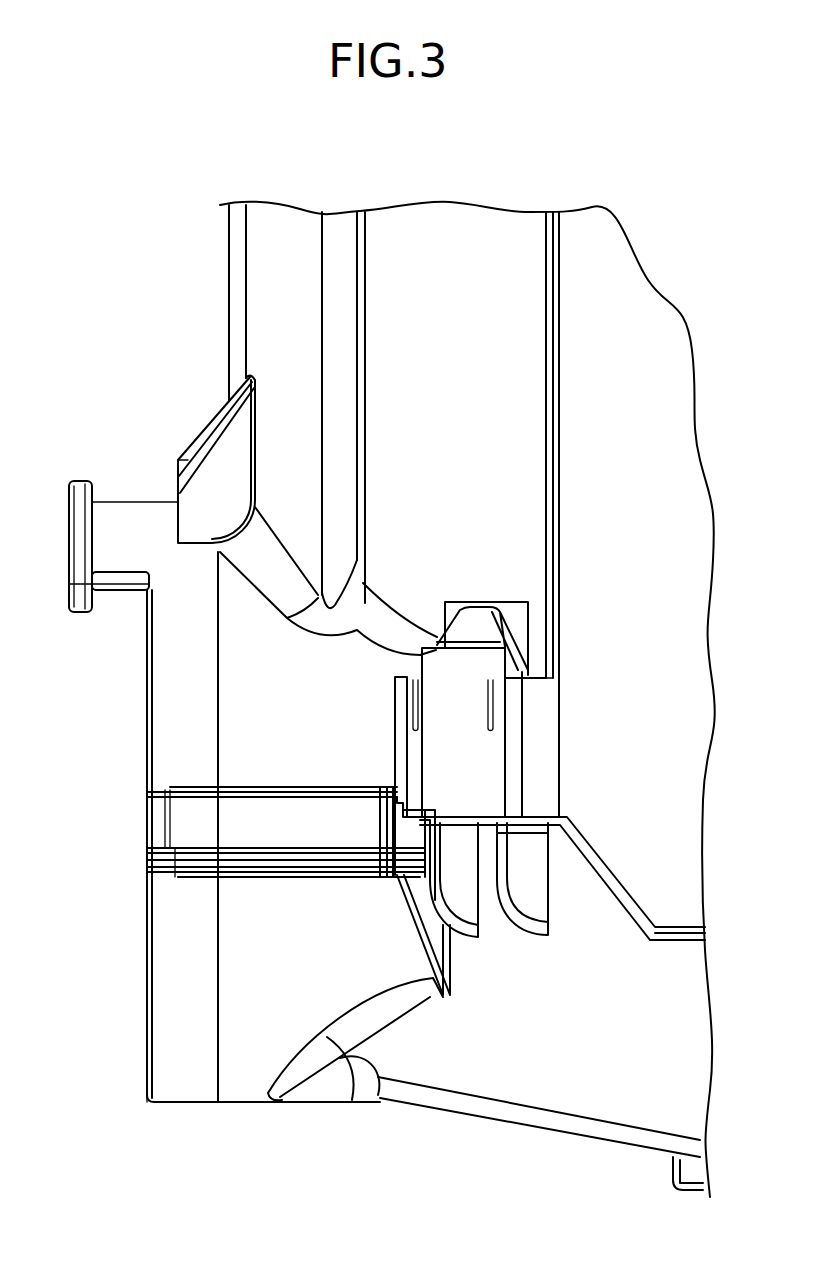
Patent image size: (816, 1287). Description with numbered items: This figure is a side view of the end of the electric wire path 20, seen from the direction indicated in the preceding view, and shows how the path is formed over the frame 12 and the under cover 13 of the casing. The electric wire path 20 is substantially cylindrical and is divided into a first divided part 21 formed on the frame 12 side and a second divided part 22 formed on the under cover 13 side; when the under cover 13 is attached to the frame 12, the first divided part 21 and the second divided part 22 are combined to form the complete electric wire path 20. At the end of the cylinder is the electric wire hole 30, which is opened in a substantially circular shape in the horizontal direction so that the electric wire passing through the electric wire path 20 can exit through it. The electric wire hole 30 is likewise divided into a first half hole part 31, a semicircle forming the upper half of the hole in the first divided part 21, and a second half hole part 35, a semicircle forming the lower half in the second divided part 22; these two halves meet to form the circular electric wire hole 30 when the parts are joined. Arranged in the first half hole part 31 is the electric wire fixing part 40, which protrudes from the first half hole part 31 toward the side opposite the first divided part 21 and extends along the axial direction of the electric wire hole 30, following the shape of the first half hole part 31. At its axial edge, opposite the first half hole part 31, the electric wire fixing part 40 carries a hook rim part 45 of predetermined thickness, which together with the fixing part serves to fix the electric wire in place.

The frame 12 is at (440, 232).
The under cover 13 is at (570, 1087).
The electric wire path 20 is at (133, 1104).
The first divided part 21 is at (158, 708).
The second divided part 22 is at (237, 1067).
The electric wire hole 30 is at (100, 879).
The first half hole part 31 is at (148, 741).
The second half hole part 35 is at (148, 974).
The electric wire fixing part 40 is at (138, 510).
The hook rim part 45 is at (80, 480).